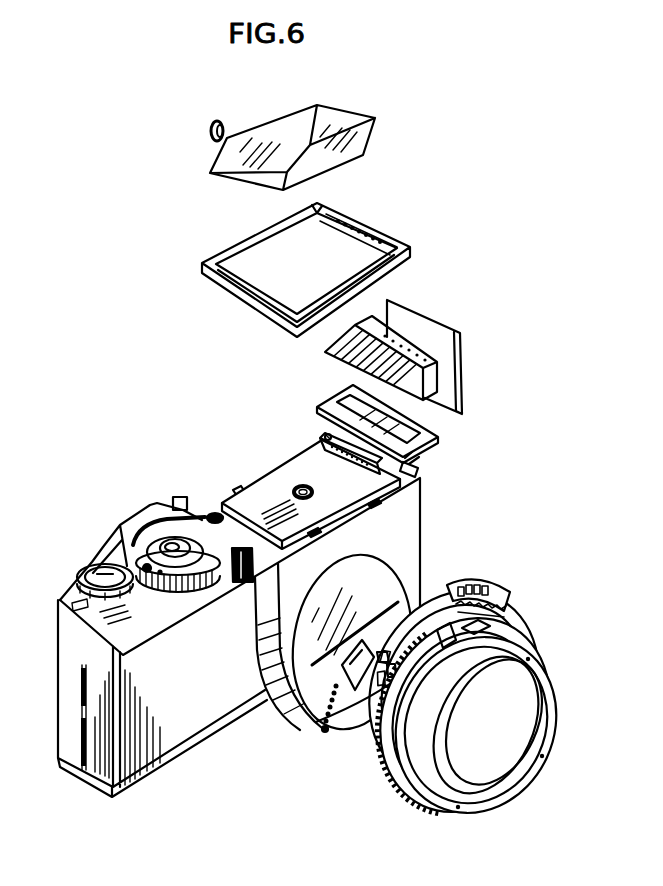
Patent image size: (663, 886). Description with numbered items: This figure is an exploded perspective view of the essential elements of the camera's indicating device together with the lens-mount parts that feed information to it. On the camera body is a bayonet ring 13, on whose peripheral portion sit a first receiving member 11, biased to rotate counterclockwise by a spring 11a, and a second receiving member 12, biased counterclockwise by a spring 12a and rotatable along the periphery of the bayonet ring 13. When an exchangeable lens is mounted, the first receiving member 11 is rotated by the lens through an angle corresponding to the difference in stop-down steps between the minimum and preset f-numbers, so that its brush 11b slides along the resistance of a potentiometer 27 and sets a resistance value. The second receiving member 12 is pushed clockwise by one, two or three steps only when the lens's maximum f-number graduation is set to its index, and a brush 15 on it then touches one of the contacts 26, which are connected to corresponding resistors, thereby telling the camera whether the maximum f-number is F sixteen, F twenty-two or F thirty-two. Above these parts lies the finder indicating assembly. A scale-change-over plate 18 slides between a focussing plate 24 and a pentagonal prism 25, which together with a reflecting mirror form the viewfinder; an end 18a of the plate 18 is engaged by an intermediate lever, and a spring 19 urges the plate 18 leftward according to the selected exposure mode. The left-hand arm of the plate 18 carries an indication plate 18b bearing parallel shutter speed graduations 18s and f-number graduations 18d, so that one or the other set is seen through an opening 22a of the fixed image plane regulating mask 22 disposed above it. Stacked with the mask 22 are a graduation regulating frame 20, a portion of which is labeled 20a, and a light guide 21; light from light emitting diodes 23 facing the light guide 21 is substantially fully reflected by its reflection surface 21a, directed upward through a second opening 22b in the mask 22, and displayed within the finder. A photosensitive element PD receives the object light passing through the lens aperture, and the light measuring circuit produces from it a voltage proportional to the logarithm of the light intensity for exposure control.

The photosensitive element PD is at (208, 131).
The pentagonal prism 25 is at (366, 142).
The image plane regulating mask 22 is at (412, 247).
The opening of mask 22a is at (388, 226).
The opening of mask 22b is at (376, 251).
The light emitting diodes 23 is at (462, 351).
The light guide 21 is at (438, 380).
The reflection surface 21a is at (370, 394).
The graduation regulating frame 20 is at (421, 450).
The slot of mask plate 20a is at (408, 423).
The scale-change-over plate 18 is at (400, 489).
The end of scale-change-over plate 18a is at (240, 584).
The indication plate 18b is at (318, 443).
The f-number graduations 18d is at (312, 447).
The shutter speed graduations 18s is at (328, 435).
The spring 19 is at (409, 470).
The focussing plate 24 is at (238, 493).
The brush 15 is at (440, 600).
The second receiving member 12 is at (367, 692).
The spring 12a is at (325, 732).
The first receiving member 11 is at (491, 624).
The spring 11a is at (395, 791).
The brush 11b is at (449, 642).
The bayonet ring 13 is at (548, 678).
The contacts 26 is at (496, 587).
The potentiometer 27 is at (509, 598).